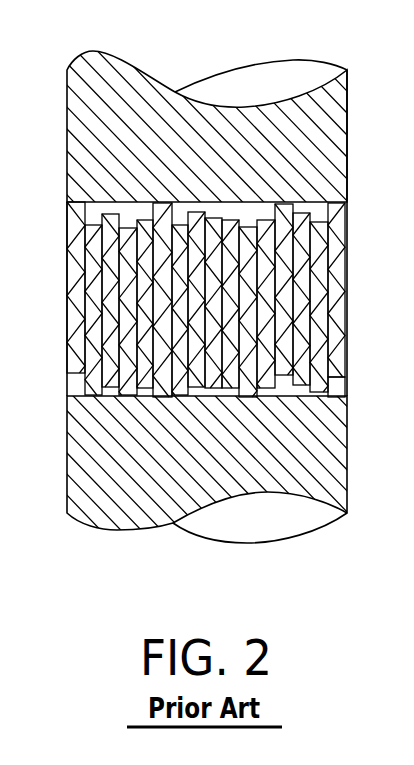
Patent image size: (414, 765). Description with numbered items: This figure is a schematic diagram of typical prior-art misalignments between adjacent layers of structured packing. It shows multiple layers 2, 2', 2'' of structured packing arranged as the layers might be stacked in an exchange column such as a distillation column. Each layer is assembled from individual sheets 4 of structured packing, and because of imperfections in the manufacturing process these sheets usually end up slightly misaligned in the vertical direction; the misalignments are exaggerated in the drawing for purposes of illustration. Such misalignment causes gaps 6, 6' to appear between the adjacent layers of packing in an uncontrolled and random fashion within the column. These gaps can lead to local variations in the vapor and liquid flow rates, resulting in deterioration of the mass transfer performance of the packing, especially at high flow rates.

The layer of structured packing 2 is at (207, 125).
The layer of structured packing 2' is at (44, 287).
The layer of structured packing 2'' is at (207, 471).
The sheet 4 is at (83, 383).
The gap 6 is at (353, 283).
The gap 6' is at (357, 392).